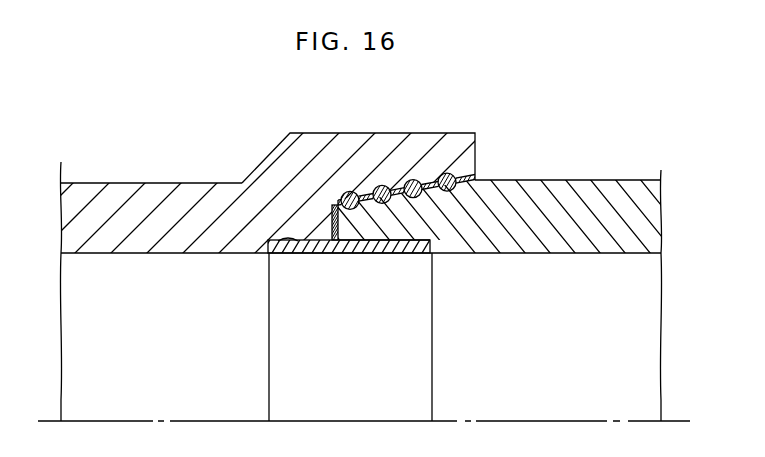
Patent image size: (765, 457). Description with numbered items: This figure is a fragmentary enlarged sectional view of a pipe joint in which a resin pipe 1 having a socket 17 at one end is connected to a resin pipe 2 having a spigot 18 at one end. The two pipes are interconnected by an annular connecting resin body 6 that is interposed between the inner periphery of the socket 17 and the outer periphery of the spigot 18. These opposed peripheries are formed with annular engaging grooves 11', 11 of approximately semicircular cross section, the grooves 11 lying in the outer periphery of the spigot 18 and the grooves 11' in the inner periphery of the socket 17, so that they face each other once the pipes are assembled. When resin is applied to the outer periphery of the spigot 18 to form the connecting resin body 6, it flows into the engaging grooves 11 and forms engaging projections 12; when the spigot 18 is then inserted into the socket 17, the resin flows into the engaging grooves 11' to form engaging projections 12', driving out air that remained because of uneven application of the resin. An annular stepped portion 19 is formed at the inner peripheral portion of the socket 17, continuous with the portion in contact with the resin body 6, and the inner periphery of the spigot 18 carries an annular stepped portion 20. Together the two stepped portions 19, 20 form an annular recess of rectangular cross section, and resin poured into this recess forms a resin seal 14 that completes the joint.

The resin pipe 1 is at (96, 192).
The resin pipe 2 is at (617, 198).
The annular connecting resin body 6 is at (414, 194).
The engaging groove 11 is at (420, 240).
The engaging groove 11' is at (467, 135).
The engaging projection 12 is at (352, 268).
The engaging projection 12' is at (413, 141).
The resin seal 14 is at (317, 254).
The socket 17 is at (371, 140).
The spigot 18 is at (387, 225).
The annular stepped portion 19 is at (283, 241).
The annular stepped portion 20 is at (417, 255).